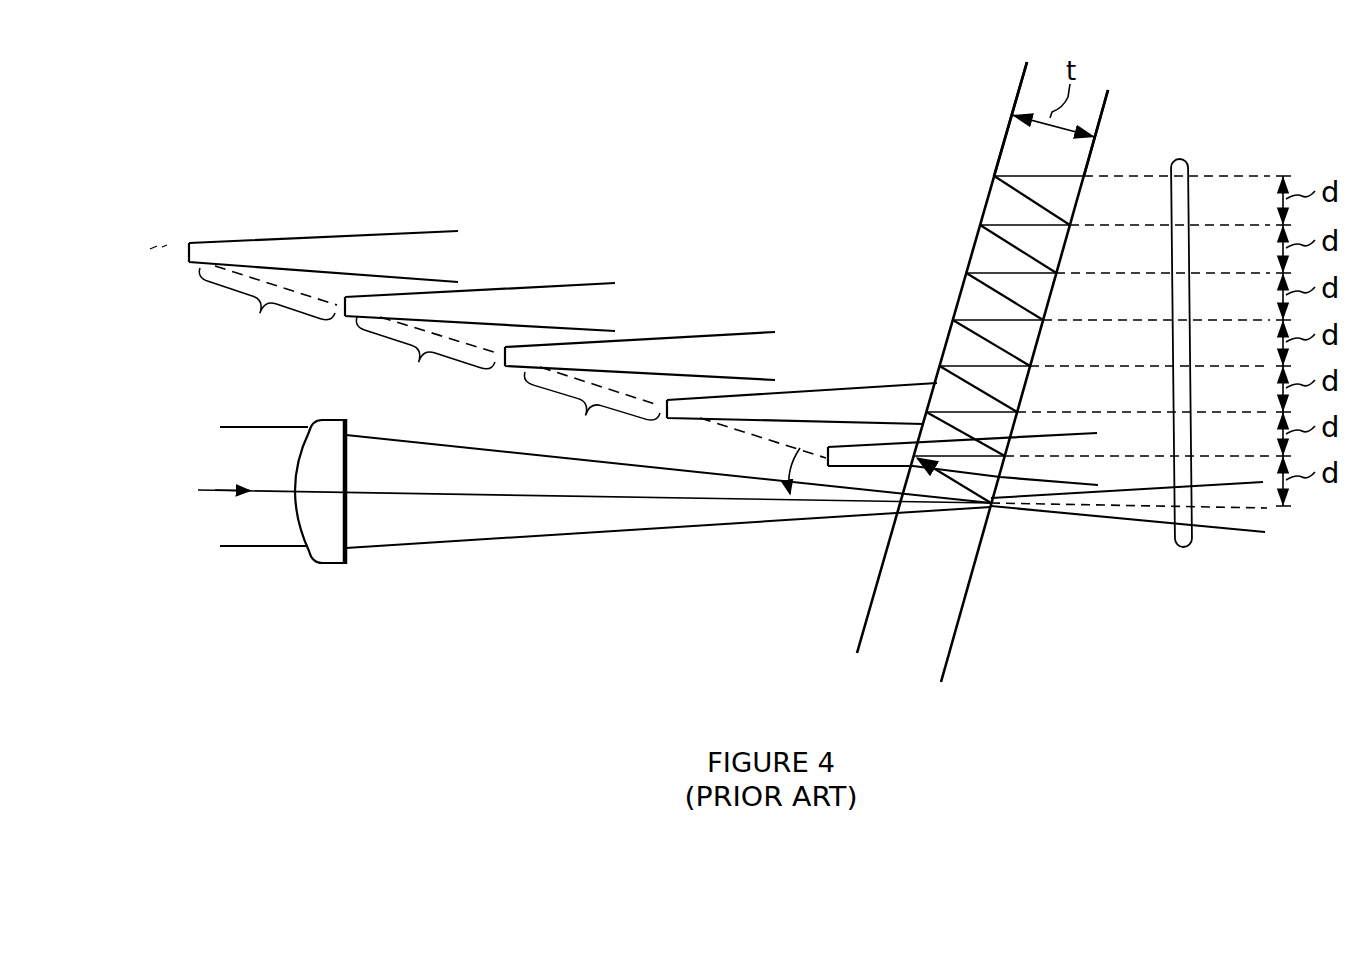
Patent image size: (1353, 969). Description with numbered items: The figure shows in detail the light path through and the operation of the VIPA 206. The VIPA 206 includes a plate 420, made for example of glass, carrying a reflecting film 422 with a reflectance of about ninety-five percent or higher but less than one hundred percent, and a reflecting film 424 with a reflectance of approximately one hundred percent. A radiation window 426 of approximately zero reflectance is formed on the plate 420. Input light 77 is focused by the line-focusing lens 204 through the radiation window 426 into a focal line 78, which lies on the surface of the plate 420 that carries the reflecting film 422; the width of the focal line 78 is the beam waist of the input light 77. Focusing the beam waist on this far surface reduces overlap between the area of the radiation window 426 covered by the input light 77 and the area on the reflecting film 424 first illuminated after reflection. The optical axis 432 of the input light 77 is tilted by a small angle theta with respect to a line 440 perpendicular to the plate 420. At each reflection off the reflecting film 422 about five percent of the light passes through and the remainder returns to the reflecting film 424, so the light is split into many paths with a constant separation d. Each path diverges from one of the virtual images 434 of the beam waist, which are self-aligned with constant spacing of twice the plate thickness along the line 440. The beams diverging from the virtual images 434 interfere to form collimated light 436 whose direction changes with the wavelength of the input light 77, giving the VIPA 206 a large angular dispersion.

The input light 77 is at (214, 522).
The focal line 78 is at (994, 509).
The line-focusing lens 204 is at (330, 566).
The VIPA 206 is at (940, 167).
The plate 420 is at (910, 637).
The reflecting film 422 is at (1108, 90).
The reflecting film 424 is at (1027, 62).
The radiation window 426 is at (893, 516).
The optical axis 432 is at (207, 488).
The virtual images 434 is at (187, 257).
The collimated light 436 is at (1186, 154).
The line 440 is at (170, 246).